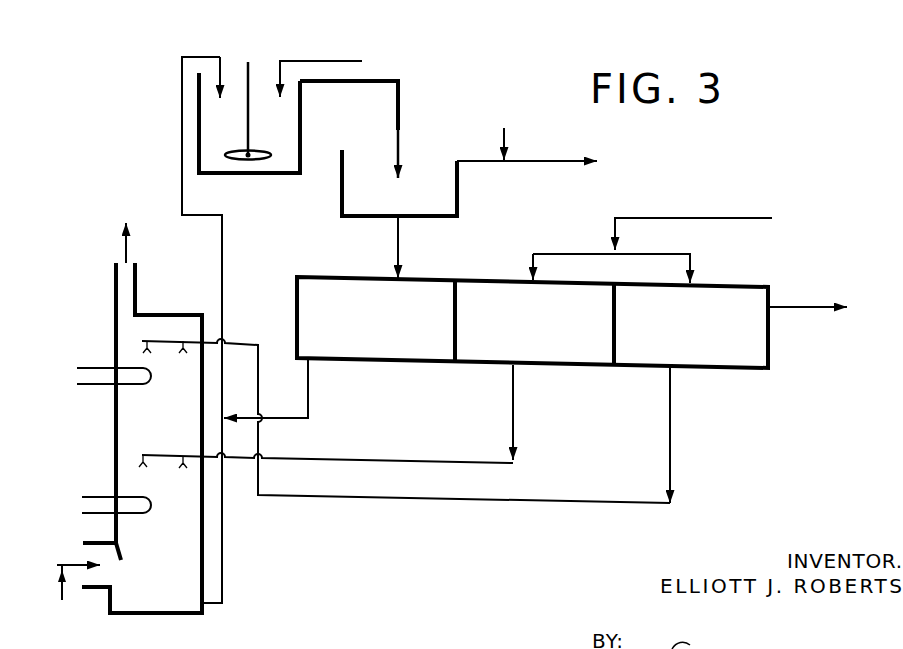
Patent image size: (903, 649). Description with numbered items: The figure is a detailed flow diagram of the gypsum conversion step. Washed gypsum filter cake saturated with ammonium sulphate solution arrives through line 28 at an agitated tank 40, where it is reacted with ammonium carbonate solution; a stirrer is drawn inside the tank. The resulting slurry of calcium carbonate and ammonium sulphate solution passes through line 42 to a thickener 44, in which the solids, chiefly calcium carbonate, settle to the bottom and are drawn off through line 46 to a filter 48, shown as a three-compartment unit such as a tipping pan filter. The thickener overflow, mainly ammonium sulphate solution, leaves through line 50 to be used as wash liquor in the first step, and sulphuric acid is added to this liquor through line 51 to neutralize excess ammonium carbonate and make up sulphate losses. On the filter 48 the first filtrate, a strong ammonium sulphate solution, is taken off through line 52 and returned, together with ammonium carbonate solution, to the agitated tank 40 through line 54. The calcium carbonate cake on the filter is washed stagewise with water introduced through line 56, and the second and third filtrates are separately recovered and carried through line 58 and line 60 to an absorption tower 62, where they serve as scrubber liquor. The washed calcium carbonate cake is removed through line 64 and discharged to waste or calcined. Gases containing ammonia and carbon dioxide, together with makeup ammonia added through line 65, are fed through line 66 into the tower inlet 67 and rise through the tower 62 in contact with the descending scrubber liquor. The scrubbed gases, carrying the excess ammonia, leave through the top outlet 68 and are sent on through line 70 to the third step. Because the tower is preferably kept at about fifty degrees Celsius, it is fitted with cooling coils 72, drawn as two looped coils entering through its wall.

The line 28 is at (340, 60).
The agitated tank 40 is at (245, 175).
The line 42 is at (398, 113).
The thickener 44 is at (457, 190).
The line 46 is at (398, 235).
The filter 48 is at (717, 370).
The line 50 is at (545, 161).
The line 51 is at (504, 136).
The line 52 is at (308, 380).
The line 54 is at (180, 143).
The line 56 is at (715, 218).
The line 58 is at (447, 462).
The line 60 is at (528, 504).
The absorption tower 62 is at (116, 455).
The line 64 is at (800, 307).
The line 65 is at (62, 600).
The line 66 is at (82, 558).
The tower inlet 67 is at (92, 590).
The top outlet 68 is at (118, 280).
The line 70 is at (126, 251).
The cooling coils 72 is at (100, 368).